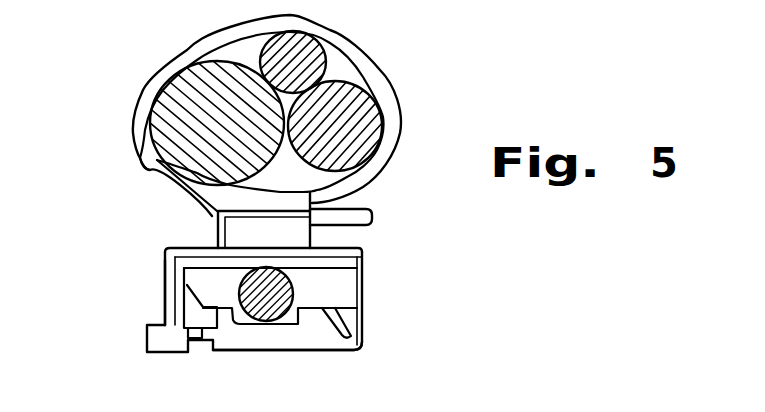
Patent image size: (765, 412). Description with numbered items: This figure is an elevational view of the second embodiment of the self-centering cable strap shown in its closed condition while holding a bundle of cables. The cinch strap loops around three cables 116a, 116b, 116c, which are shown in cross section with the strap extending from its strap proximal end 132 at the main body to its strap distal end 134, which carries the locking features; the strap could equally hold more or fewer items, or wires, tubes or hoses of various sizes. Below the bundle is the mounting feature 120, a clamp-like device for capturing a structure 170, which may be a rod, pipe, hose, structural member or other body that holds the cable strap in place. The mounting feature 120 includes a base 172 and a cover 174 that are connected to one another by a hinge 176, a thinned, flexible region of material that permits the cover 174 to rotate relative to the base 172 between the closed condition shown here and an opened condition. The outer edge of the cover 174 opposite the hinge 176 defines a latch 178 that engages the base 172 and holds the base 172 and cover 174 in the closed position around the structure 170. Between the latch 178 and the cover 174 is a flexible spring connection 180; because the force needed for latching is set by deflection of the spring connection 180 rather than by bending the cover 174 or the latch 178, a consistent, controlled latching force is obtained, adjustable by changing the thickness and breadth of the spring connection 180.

The cable 116a is at (172, 103).
The cable 116b is at (353, 115).
The cable 116c is at (303, 58).
The strap proximal end 132 is at (327, 200).
The strap distal end 134 is at (370, 218).
The mounting feature 120 is at (377, 290).
The base 172 is at (190, 253).
The latch 178 is at (167, 300).
The spring connection 180 is at (200, 340).
The structure 170 is at (267, 312).
The cover 174 is at (305, 343).
The hinge 176 is at (352, 343).